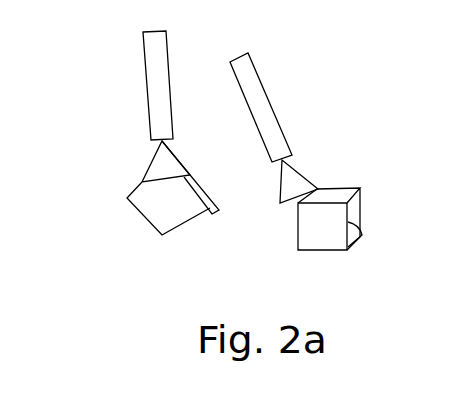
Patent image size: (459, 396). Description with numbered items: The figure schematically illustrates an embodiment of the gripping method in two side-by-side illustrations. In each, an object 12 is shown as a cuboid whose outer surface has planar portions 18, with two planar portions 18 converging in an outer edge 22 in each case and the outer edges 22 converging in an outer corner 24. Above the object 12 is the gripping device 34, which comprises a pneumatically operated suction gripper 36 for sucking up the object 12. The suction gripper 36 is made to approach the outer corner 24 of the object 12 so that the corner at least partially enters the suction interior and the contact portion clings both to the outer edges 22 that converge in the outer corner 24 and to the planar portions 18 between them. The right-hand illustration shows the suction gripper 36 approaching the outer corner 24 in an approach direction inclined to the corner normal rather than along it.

The object 12 is at (378, 220).
The planar portion 18 is at (157, 208).
The outer edge 22 is at (370, 265).
The outer corner 24 is at (127, 198).
The gripping device 34 is at (121, 92).
The suction gripper 36 is at (152, 160).